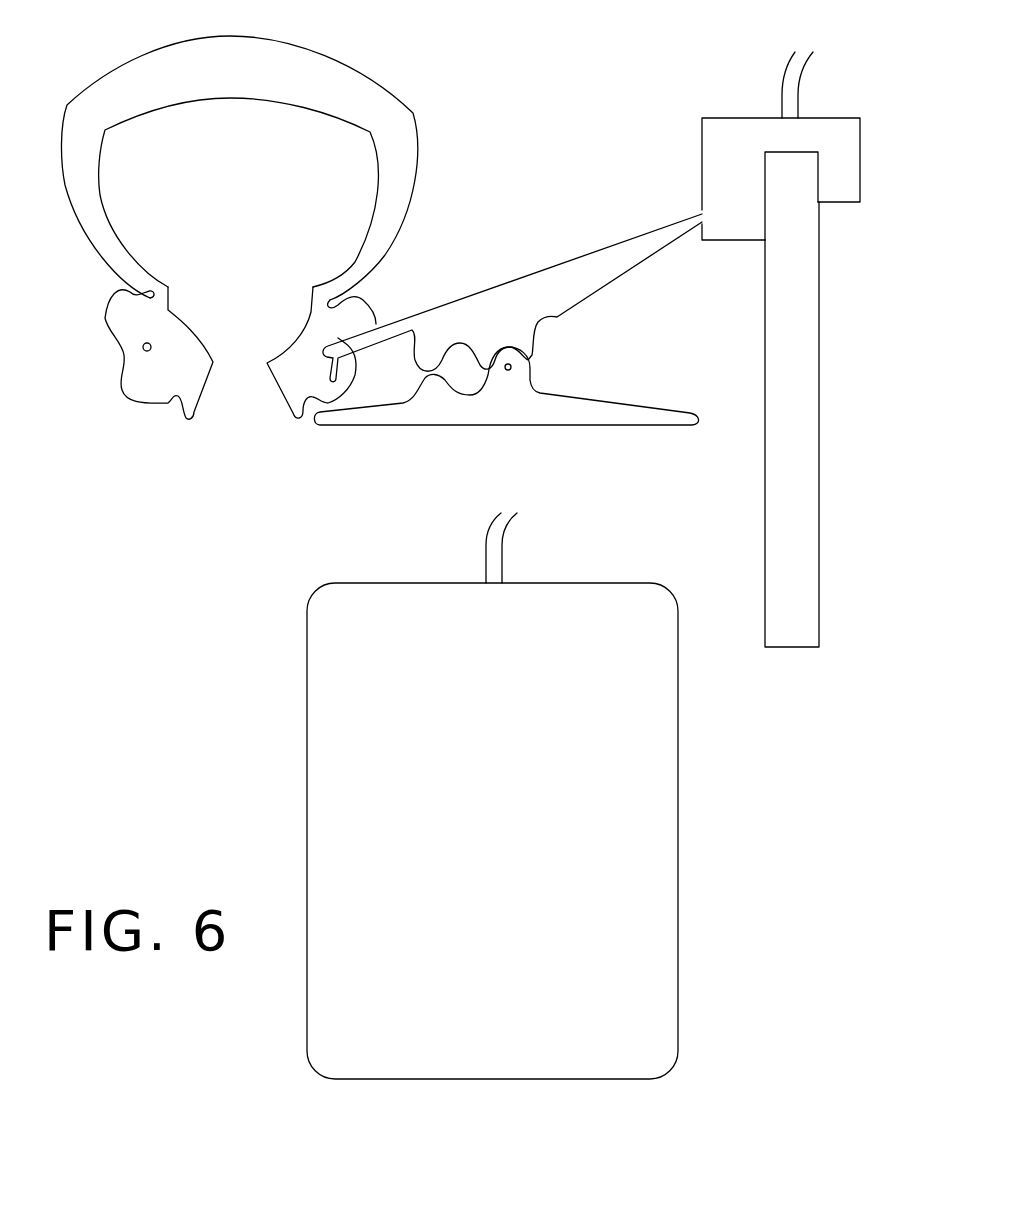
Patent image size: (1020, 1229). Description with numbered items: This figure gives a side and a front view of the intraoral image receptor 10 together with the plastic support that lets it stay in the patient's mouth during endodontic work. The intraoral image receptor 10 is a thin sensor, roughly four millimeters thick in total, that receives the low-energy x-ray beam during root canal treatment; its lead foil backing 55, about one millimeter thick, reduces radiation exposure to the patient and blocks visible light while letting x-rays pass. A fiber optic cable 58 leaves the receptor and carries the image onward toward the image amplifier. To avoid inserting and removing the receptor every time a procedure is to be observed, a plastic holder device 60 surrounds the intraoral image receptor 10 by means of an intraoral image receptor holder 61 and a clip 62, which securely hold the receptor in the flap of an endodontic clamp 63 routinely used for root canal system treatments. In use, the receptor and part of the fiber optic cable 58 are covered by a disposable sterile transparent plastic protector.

The intraoral image receptor 10 is at (790, 522).
The lead foil backing 55 is at (819, 412).
The fiber optic cable 58 is at (782, 97).
The plastic holder device 60 is at (702, 212).
The intraoral image receptor holder 61 is at (845, 155).
The clip 62 is at (488, 427).
The endodontic clamp 63 is at (278, 393).